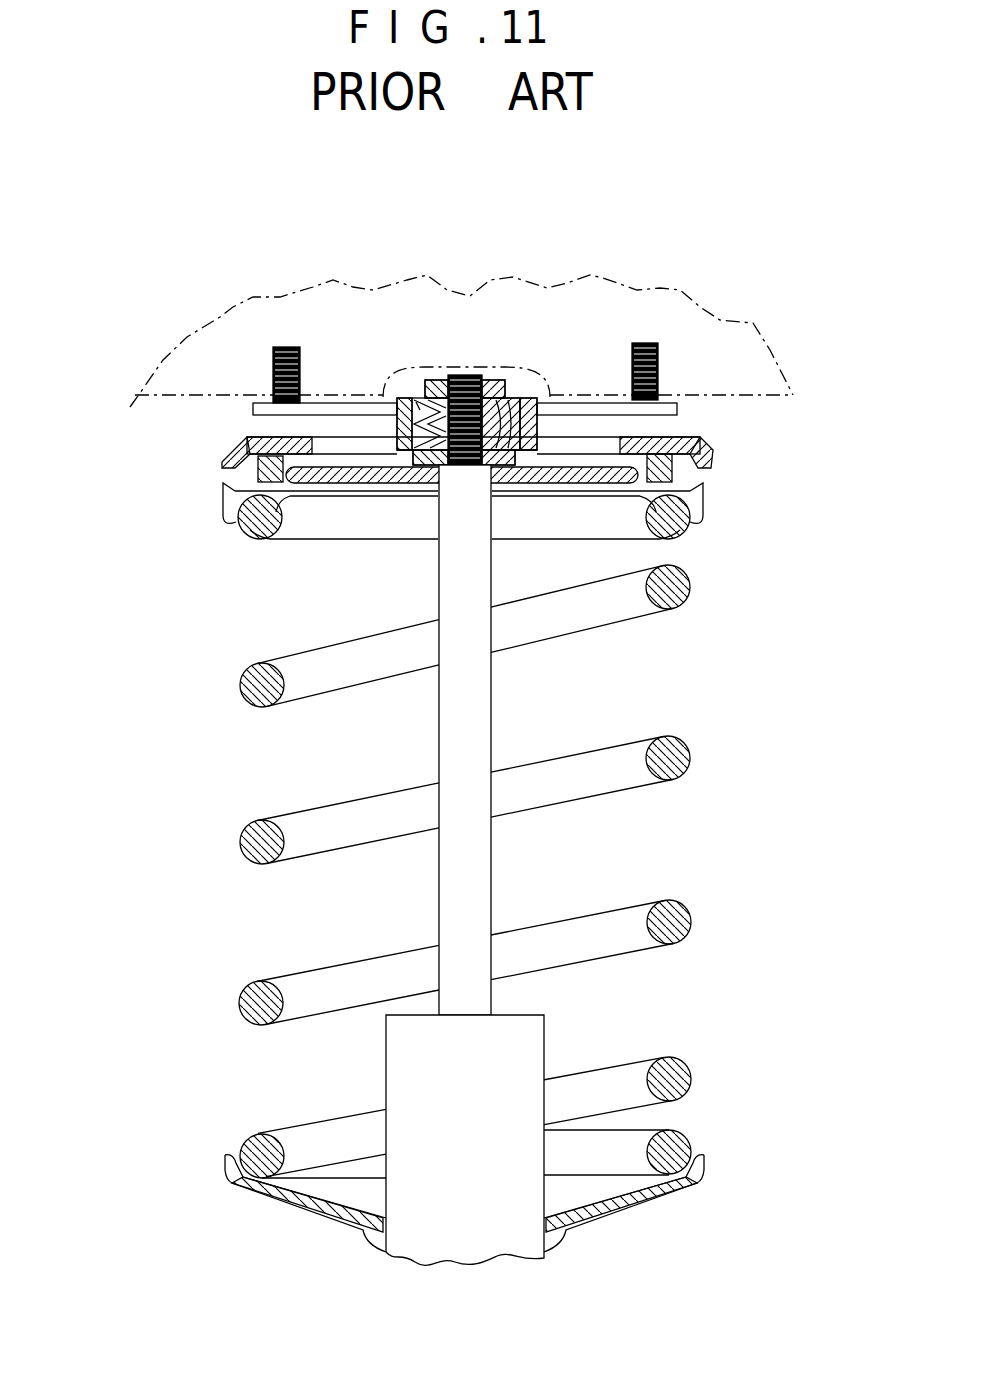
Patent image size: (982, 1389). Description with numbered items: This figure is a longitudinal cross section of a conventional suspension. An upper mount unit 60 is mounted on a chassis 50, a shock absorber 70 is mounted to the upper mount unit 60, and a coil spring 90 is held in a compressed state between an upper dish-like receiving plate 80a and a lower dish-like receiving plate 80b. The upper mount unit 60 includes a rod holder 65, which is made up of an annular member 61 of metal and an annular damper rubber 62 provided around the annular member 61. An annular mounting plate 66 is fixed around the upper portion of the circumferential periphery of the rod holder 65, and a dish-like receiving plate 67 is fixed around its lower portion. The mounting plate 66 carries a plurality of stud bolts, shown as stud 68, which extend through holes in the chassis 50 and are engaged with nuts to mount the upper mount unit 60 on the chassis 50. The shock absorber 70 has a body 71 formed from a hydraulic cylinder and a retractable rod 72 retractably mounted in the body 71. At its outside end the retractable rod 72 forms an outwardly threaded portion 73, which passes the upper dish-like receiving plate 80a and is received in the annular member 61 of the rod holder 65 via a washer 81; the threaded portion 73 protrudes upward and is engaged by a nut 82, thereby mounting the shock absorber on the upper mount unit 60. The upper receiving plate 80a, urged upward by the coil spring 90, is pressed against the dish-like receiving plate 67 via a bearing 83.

The chassis 50 is at (398, 303).
The upper mount unit 60 is at (535, 390).
The annular member 61 is at (387, 457).
The annular damper rubber 62 is at (413, 393).
The rod holder 65 is at (403, 420).
The annular mounting plate 66 is at (253, 408).
The dish-like receiving plate 67 is at (222, 460).
The mounting bolt 68 is at (275, 358).
The shock absorber 70 is at (410, 900).
The body 71 is at (530, 1047).
The retractable rod 72 is at (457, 724).
The outwardly threaded portion 73 is at (463, 375).
The upper dish-like receiving plate 80a is at (703, 498).
The lower dish-like receiving plate 80b is at (630, 1207).
The washer 81 is at (537, 438).
The nut 82 is at (482, 378).
The bearing 83 is at (257, 472).
The coil spring 90 is at (627, 793).